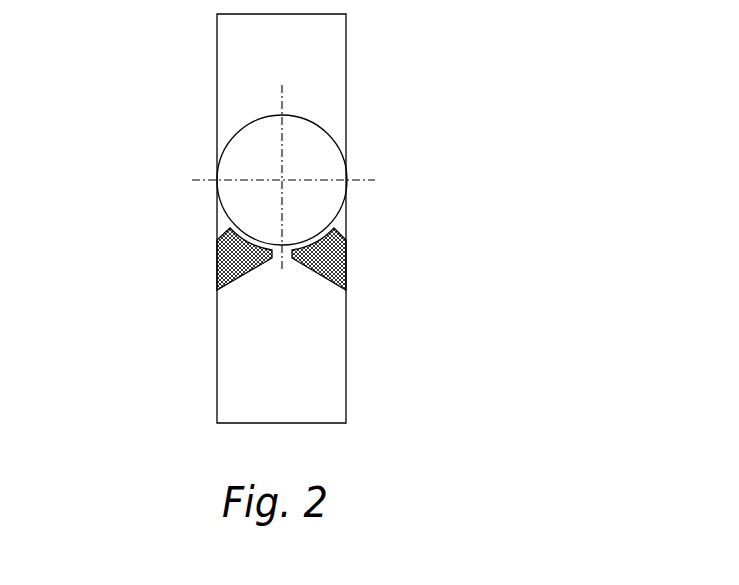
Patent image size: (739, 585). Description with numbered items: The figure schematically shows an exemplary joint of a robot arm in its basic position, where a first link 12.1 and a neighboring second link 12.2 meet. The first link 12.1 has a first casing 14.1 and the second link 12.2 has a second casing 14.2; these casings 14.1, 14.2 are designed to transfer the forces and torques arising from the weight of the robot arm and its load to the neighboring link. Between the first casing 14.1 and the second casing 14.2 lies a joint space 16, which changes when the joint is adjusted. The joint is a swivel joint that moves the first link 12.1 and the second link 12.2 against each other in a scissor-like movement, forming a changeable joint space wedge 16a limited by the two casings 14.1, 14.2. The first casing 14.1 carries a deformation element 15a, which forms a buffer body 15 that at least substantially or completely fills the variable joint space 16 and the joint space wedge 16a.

The second link 12.2 is at (403, 132).
The second casing 14.2 is at (342, 92).
The first link 12.1 is at (402, 336).
The first casing 14.1 is at (340, 368).
The joint space 16 is at (368, 177).
The joint space wedge 16a is at (350, 220).
The buffer body 15 is at (277, 264).
The deformation element 15a is at (217, 258).